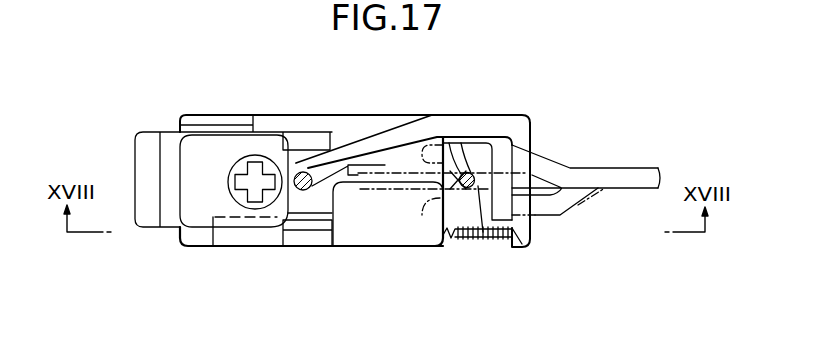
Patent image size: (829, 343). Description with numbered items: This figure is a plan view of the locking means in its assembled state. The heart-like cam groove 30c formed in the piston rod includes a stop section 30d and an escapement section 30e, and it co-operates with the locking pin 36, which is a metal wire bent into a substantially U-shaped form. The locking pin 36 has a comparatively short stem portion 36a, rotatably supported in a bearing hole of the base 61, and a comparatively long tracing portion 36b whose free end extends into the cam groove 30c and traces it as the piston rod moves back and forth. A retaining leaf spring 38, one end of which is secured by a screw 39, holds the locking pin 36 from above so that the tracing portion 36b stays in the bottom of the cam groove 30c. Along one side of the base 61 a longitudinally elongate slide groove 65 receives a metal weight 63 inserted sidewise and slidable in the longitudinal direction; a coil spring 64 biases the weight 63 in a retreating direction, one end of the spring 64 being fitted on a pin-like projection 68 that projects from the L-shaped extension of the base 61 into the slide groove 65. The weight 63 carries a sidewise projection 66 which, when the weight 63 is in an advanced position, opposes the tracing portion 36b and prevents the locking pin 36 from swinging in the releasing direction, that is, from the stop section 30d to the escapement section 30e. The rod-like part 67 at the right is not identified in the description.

The heart-like cam groove 30c is at (533, 145).
The stop section 30d is at (466, 172).
The escapement section 30e is at (432, 205).
The locking pin 36 is at (390, 165).
The stem portion 36a is at (303, 191).
The tracing portion 36b is at (480, 240).
The retaining leaf spring 38 is at (207, 147).
The screw 39 is at (252, 162).
The base 61 is at (273, 122).
The weight 63 is at (377, 233).
The coil spring 64 is at (462, 240).
The slide groove 65 is at (250, 235).
The sidewise projection 66 is at (394, 204).
The rod 67 is at (532, 176).
The pin-like projection 68 is at (513, 240).